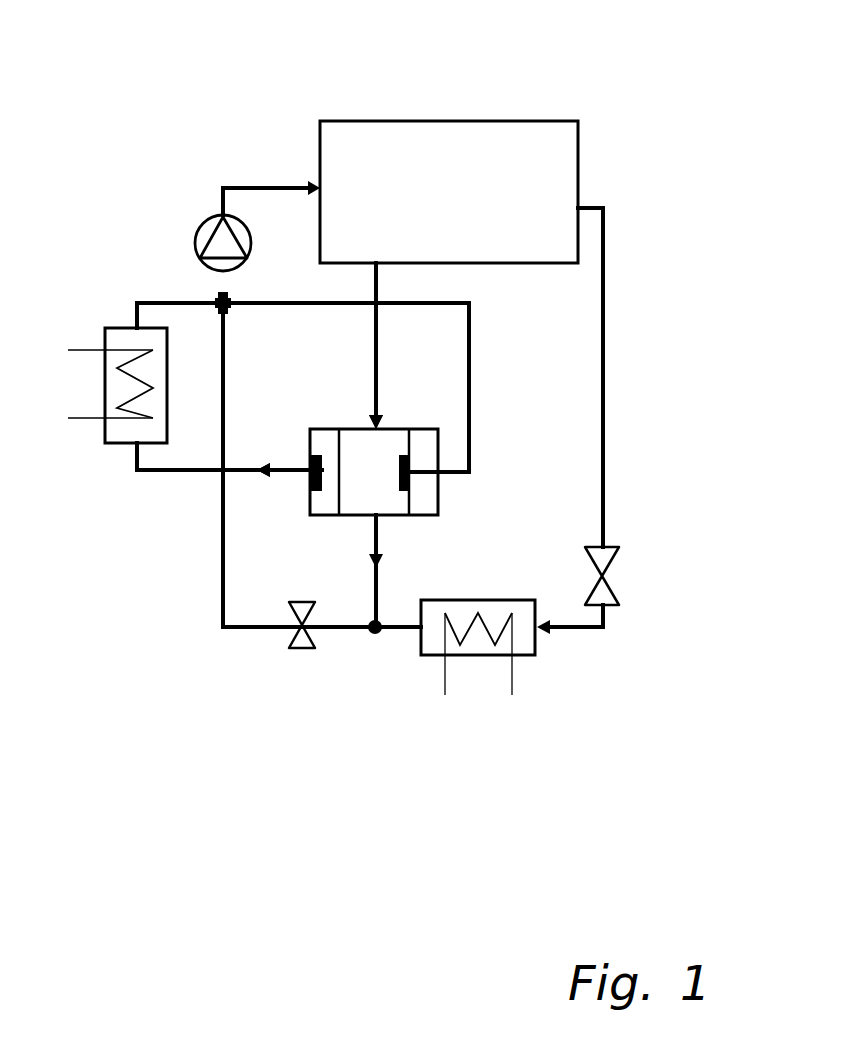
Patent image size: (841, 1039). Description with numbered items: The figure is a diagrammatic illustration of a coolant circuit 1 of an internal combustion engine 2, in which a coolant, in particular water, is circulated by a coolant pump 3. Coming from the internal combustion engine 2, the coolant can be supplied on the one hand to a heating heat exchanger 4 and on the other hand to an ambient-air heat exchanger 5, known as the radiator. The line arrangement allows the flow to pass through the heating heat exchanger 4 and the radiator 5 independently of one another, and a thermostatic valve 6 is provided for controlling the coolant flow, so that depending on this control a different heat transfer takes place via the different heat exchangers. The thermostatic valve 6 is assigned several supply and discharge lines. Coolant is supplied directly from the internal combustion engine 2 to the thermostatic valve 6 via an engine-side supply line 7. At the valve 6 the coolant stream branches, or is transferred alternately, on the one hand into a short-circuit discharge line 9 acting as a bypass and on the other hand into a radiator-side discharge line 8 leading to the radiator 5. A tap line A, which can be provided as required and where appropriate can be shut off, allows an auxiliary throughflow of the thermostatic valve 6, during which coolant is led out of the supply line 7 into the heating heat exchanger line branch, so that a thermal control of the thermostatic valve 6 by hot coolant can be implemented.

The coolant circuit 1 is at (635, 241).
The internal combustion engine 2 is at (527, 140).
The coolant pump 3 is at (205, 226).
The heating heat exchanger 4 is at (526, 653).
The ambient-air heat exchanger 5 is at (118, 336).
The thermostatic valve 6 is at (435, 500).
The engine-side supply line 7 is at (378, 390).
The radiator-side discharge line 8 is at (247, 465).
The short-circuit discharge line 9 is at (468, 447).
The tap line A is at (373, 580).